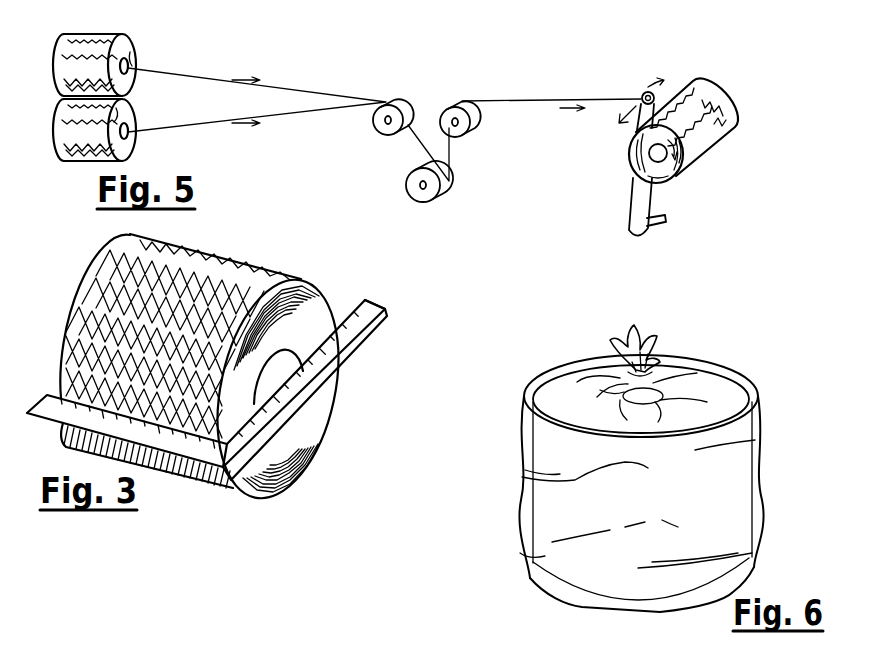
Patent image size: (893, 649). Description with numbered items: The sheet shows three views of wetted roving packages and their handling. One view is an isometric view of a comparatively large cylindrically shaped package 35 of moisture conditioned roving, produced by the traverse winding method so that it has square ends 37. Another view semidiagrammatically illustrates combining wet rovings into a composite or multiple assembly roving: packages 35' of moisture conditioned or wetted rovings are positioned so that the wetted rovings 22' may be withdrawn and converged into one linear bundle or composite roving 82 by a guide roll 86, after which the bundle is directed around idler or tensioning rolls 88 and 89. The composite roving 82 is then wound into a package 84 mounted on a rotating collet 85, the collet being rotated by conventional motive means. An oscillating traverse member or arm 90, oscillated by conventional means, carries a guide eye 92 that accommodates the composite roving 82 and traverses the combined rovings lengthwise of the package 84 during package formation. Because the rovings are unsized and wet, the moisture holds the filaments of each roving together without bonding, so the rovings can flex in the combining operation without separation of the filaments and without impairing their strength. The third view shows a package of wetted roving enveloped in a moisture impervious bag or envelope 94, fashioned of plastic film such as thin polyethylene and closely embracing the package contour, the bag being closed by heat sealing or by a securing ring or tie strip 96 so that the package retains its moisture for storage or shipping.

In FIG. 5, the packages of wetted rovings 35' is at (120, 89).
In FIG. 5, the wetted rovings 22' is at (257, 102).
In FIG. 5, the guide roll 86 is at (400, 100).
In FIG. 5, the idler or tensioning roll 88 is at (408, 183).
In FIG. 5, the idler or tensioning roll 89 is at (461, 137).
In FIG. 5, the composite roving 82 is at (408, 144).
In FIG. 5, the guide eye 92 is at (643, 97).
In FIG. 5, the package 84 is at (722, 98).
In FIG. 5, the rotating collet 85 is at (665, 177).
In FIG. 5, the oscillating traverse member or arm 90 is at (631, 191).
In FIG. 3, the package 35 is at (208, 368).
In FIG. 6, the package 35 is at (678, 464).
In FIG. 3, the square ends 37 is at (313, 300).
In FIG. 6, the moisture-impervious bag or envelope 94 is at (760, 432).
In FIG. 6, the securing ring or tie strip 96 is at (660, 362).